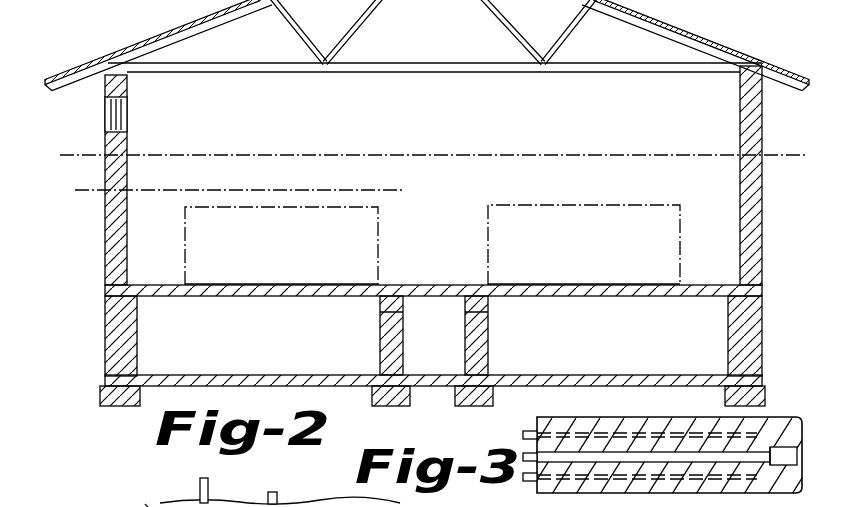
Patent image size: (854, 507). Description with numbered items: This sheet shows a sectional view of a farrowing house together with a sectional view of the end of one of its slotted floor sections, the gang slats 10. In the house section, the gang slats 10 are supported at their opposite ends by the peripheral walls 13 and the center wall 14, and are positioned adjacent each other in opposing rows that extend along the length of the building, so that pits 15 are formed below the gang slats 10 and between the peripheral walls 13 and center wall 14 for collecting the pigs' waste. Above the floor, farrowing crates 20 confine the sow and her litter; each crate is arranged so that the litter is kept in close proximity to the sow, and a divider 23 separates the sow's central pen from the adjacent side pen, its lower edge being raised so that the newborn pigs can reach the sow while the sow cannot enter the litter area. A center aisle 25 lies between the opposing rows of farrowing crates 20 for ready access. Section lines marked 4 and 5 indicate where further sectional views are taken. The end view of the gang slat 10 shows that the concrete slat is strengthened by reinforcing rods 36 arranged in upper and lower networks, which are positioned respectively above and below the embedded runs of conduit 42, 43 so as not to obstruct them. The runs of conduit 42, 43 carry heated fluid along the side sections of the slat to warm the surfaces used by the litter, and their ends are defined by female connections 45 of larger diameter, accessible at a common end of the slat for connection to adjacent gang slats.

In FIG. 2, the section line 4- 4 is at (405, 238).
In FIG. 2, the section line 5- 5 is at (785, 138).
In FIG. 2, the gang slat 10 is at (275, 272).
In FIG. 3, the gang slat 10 is at (586, 411).
In FIG. 2, the peripheral wall 13 is at (138, 325).
In FIG. 2, the center wall 14 is at (465, 350).
In FIG. 2, the pit 15 is at (160, 377).
In FIG. 2, the farrowing crate 20 is at (312, 198).
In FIG. 3, the divider 23 is at (331, 500).
In FIG. 2, the center aisle 25 is at (447, 285).
In FIG. 3, the reinforcing rods 36 is at (700, 430).
In FIG. 3, the run of conduit 42 is at (531, 460).
In FIG. 3, the run of conduit 43 is at (513, 489).
In FIG. 3, the female connection 45 is at (779, 447).